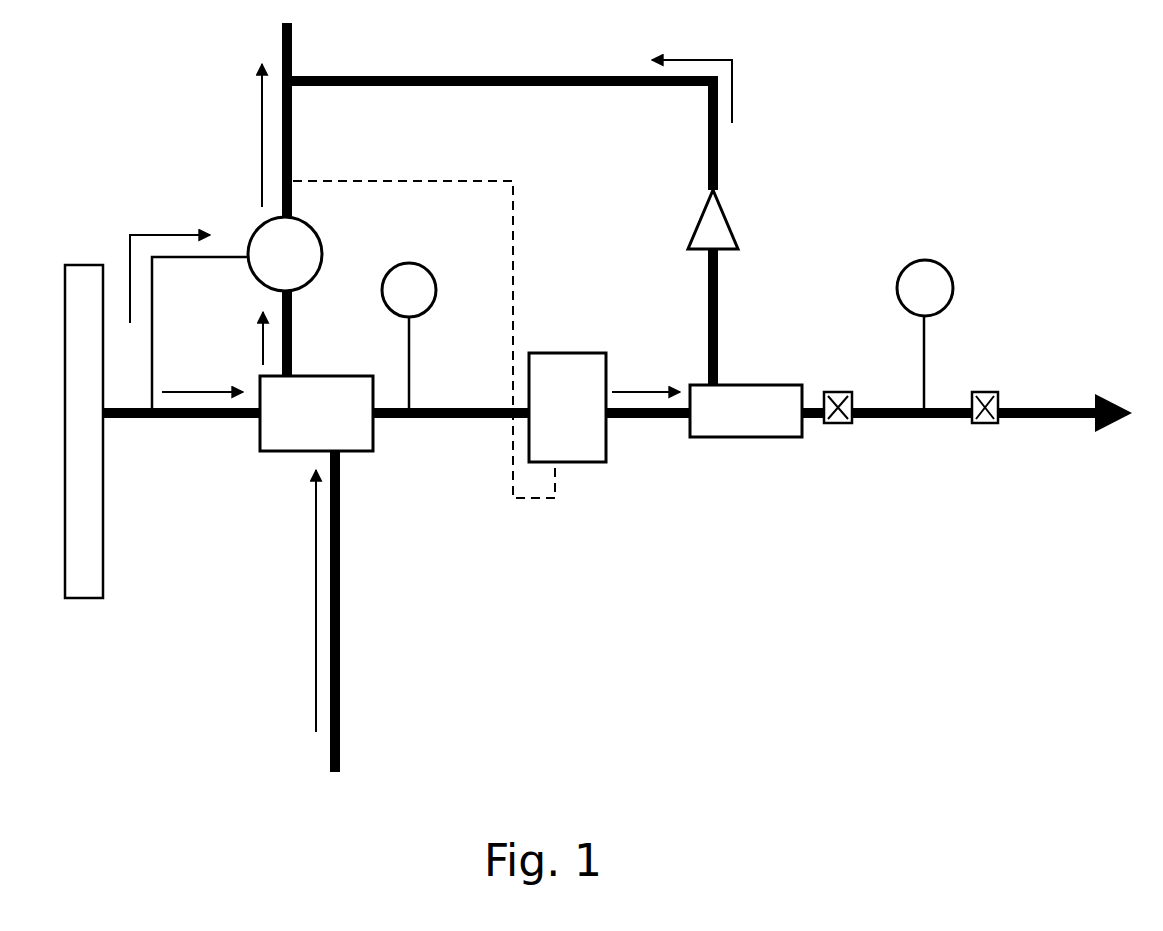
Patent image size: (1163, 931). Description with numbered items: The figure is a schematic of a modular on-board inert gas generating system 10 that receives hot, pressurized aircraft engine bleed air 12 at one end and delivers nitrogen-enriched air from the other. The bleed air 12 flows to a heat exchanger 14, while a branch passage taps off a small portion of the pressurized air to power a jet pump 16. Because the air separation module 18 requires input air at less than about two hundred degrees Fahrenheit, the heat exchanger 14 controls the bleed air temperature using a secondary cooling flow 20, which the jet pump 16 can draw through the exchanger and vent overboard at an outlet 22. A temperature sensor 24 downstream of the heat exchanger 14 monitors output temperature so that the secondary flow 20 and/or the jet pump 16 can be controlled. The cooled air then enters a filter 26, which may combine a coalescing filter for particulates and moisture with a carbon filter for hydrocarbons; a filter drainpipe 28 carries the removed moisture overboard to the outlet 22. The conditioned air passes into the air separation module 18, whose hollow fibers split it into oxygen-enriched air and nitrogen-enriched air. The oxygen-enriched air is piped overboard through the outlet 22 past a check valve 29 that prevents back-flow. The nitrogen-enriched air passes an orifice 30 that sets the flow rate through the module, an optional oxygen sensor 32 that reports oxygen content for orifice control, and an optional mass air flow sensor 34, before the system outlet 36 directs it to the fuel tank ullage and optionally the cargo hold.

The system 10 is at (996, 86).
The aircraft engine bleed air 12 is at (103, 495).
The heat exchanger 14 is at (373, 440).
The jet pump 16 is at (320, 243).
The air separation module 18 is at (758, 437).
The secondary cooling flow 20 is at (330, 748).
The outlet 22 is at (282, 30).
The temperature sensor 24 is at (420, 265).
The filter 26 is at (606, 440).
The filter drainpipe 28 is at (513, 290).
The check valve 29 is at (720, 208).
The orifice 30 is at (850, 423).
The oxygen sensor 32 is at (940, 250).
The mass air flow sensor 34 is at (997, 423).
The system outlet 36 is at (1075, 405).